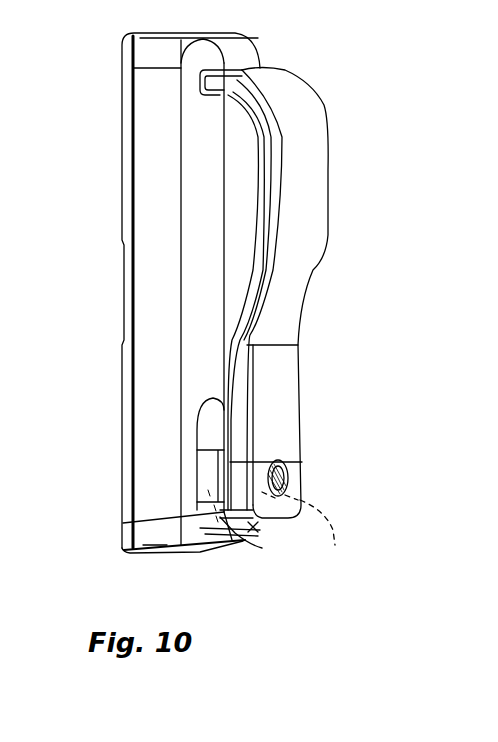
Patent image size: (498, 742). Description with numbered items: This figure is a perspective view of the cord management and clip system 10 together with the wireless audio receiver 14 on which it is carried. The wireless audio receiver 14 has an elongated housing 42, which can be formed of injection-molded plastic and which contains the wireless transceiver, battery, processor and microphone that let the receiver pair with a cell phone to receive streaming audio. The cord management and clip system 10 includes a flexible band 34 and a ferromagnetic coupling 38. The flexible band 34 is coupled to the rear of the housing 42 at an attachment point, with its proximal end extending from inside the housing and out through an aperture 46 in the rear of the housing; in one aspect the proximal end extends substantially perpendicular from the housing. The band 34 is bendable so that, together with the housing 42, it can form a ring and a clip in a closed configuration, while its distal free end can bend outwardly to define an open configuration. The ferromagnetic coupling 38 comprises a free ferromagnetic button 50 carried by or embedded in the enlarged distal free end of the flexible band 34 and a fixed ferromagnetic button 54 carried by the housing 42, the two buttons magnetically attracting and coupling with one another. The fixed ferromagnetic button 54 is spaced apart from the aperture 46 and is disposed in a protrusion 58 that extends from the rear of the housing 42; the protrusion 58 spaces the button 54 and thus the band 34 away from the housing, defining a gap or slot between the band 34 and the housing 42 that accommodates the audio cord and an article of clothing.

The cord management and clip system 10 is at (318, 355).
The wireless audio receiver 14 is at (97, 398).
The flexible band 34 is at (308, 215).
The ferromagnetic coupling 38 is at (252, 520).
The housing 42 is at (153, 135).
The aperture 46 is at (250, 63).
The free ferromagnetic button 50 is at (302, 521).
The fixed ferromagnetic button 54 is at (227, 560).
The protrusion 58 is at (210, 472).